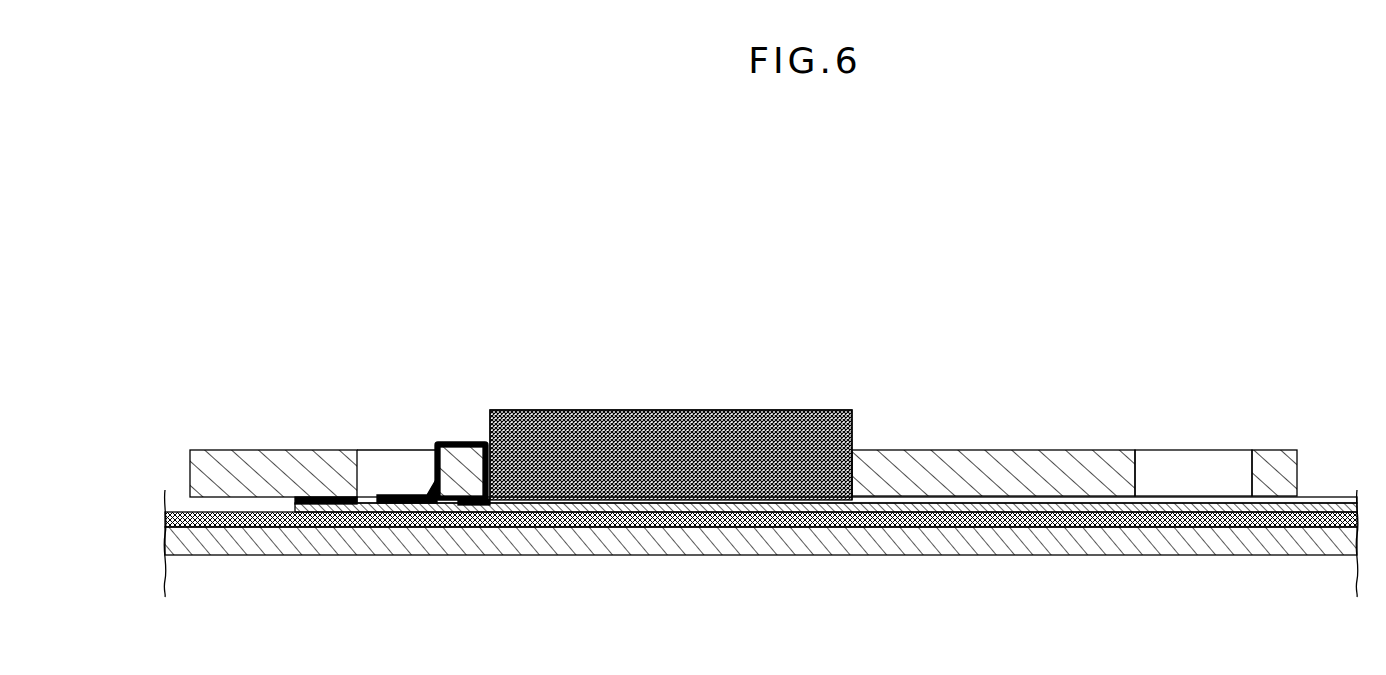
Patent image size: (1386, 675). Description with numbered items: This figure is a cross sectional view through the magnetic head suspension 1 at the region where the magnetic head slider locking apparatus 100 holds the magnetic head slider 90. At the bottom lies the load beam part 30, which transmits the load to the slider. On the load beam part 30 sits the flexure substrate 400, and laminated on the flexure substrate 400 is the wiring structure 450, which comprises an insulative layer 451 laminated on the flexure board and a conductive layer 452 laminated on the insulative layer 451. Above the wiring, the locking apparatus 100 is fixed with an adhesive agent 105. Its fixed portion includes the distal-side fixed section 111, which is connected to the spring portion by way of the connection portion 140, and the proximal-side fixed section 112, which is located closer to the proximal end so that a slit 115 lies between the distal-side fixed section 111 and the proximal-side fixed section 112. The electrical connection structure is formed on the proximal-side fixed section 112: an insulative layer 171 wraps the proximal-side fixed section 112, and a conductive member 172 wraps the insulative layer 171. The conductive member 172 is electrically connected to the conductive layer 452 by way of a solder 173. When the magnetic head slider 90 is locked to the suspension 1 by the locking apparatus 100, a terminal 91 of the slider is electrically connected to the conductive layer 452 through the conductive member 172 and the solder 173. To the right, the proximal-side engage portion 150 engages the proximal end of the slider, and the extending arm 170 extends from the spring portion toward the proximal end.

The magnetic head suspension 1 is at (925, 578).
The load beam part 30 is at (818, 532).
The flexure substrate 400 is at (657, 522).
The wiring structure 450 is at (443, 504).
The insulative layer 451 is at (563, 508).
The conductive layer 452 is at (400, 496).
The proximal-side fixed section 112 is at (465, 500).
The adhesive agent 105 is at (303, 502).
The connection portion 140 is at (236, 470).
The distal-side fixed section 111 is at (326, 470).
The slit 115 is at (374, 468).
The solder 173 is at (432, 492).
The conductive member 172 is at (443, 443).
The insulative layer 171 is at (462, 478).
The magnetic head slider 90 is at (675, 411).
The terminal 91 is at (506, 411).
The proximal-side engage portion 150 is at (888, 470).
The extending arm 170 is at (1140, 430).
The magnetic head slider locking apparatus 100 is at (1013, 383).